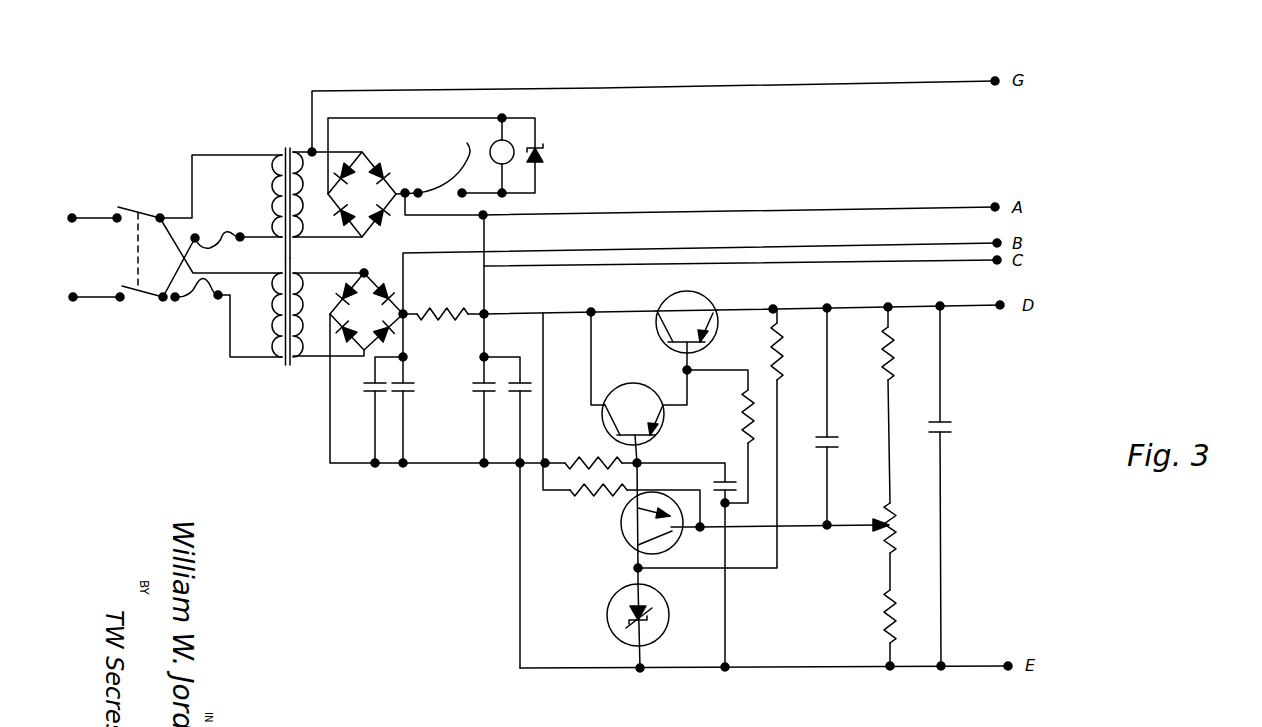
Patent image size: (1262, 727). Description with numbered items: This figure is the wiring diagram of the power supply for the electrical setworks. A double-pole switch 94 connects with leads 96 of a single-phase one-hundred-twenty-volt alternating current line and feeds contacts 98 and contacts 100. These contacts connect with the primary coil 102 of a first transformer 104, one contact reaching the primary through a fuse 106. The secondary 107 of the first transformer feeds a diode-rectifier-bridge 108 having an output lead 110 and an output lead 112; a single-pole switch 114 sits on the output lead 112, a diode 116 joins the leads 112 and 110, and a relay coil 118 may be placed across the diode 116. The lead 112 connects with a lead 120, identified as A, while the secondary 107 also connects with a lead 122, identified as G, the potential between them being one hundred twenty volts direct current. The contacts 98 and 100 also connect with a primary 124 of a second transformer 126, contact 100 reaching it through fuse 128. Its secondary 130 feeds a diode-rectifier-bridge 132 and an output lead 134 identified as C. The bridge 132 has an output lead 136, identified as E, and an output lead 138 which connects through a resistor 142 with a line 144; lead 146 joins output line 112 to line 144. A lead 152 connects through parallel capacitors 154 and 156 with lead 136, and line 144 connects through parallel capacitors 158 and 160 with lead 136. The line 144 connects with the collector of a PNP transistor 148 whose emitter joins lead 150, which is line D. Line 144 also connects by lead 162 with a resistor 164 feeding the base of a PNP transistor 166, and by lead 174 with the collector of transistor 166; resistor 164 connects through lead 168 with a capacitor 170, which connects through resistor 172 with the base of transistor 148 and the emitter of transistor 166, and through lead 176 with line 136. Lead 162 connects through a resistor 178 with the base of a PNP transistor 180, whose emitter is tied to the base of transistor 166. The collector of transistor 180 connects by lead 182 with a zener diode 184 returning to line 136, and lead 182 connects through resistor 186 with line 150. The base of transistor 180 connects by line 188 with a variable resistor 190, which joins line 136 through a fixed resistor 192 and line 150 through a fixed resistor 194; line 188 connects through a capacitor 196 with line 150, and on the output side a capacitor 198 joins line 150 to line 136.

The double-pole switch 94 is at (130, 207).
The leads 96 is at (100, 221).
The contacts 98 is at (162, 212).
The contacts 100 is at (163, 297).
The primary coil 102 is at (267, 170).
The first transformer 104 is at (287, 148).
The fuse 106 is at (236, 228).
The secondary 107 is at (343, 218).
The diode-rectifier-bridge 108 is at (358, 168).
The output lead 110 is at (370, 118).
The output lead 112 is at (386, 218).
The single-pole switch 114 is at (433, 162).
The diode 116 is at (545, 150).
The relay coil 118 is at (510, 140).
The lead 120 is at (792, 208).
The lead 122 is at (600, 86).
The primary 124 is at (273, 313).
The transformer 126 is at (287, 364).
The fuse 128 is at (193, 307).
The secondary 130 is at (300, 315).
The diode-rectifier-bridge 132 is at (337, 330).
The output lead 134 is at (883, 263).
The output lead 136 is at (333, 410).
The output lead 138 is at (403, 265).
The resistor 142 is at (465, 308).
The line 144 is at (540, 303).
The lead 146 is at (487, 233).
The PNP transistor 148 is at (687, 302).
The lead 150 is at (750, 306).
The lead 152 is at (412, 333).
The capacitor 154 is at (367, 393).
The capacitor 156 is at (420, 396).
The capacitor 158 is at (478, 388).
The capacitor 160 is at (533, 377).
The lead 162 is at (547, 367).
The resistor 164 is at (598, 453).
The PNP transistor 166 is at (660, 370).
The lead 168 is at (705, 462).
The capacitor 170 is at (717, 482).
The resistor 172 is at (743, 422).
The lead 174 is at (595, 357).
The lead 176 is at (733, 593).
The resistor 178 is at (590, 498).
The PNP transistor 180 is at (627, 535).
The lead 182 is at (637, 578).
The zener diode 184 is at (610, 623).
The resistor 186 is at (803, 332).
The line 188 is at (810, 527).
The variable resistor 190 is at (920, 503).
The fixed resistor 192 is at (886, 620).
The fixed resistor 194 is at (883, 358).
The capacitor 196 is at (857, 427).
The capacitor 198 is at (957, 427).